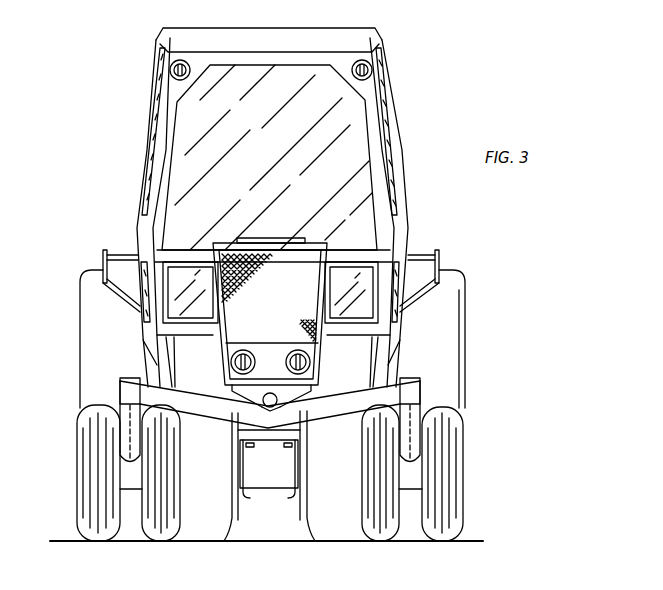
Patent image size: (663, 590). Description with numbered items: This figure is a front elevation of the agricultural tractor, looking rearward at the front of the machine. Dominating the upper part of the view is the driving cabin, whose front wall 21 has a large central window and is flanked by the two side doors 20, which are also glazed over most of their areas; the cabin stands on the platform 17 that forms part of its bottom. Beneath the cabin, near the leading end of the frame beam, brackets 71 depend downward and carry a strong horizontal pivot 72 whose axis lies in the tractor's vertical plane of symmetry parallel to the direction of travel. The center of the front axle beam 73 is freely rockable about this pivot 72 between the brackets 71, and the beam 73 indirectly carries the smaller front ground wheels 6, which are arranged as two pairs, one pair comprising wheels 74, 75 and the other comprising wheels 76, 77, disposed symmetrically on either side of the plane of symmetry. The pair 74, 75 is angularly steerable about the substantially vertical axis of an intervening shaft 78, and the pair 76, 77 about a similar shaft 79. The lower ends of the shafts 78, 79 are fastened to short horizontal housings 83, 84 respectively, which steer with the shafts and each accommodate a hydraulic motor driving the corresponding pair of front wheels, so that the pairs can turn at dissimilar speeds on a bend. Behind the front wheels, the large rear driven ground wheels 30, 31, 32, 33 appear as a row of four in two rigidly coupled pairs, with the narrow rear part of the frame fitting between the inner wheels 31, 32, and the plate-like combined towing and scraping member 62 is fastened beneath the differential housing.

The front ground wheels 6 is at (276, 492).
The platform 17 is at (117, 253).
The side doors 20 is at (150, 147).
The front wall 21 is at (167, 118).
The rear driven ground wheel 30 is at (460, 367).
The rear driven ground wheel 31 is at (327, 545).
The rear driven ground wheel 32 is at (224, 545).
The rear driven ground wheel 33 is at (80, 328).
The combined towing and scraping member 62 is at (272, 488).
The brackets 71 is at (262, 399).
The pivot 72 is at (279, 402).
The front axle beam 73 is at (204, 409).
The front wheel 74 is at (118, 545).
The front wheel 75 is at (172, 545).
The front wheel 76 is at (380, 545).
The front wheel 77 is at (445, 545).
The shaft 78 is at (120, 412).
The shaft 79 is at (418, 412).
The housing 83 is at (130, 489).
The housing 84 is at (411, 489).